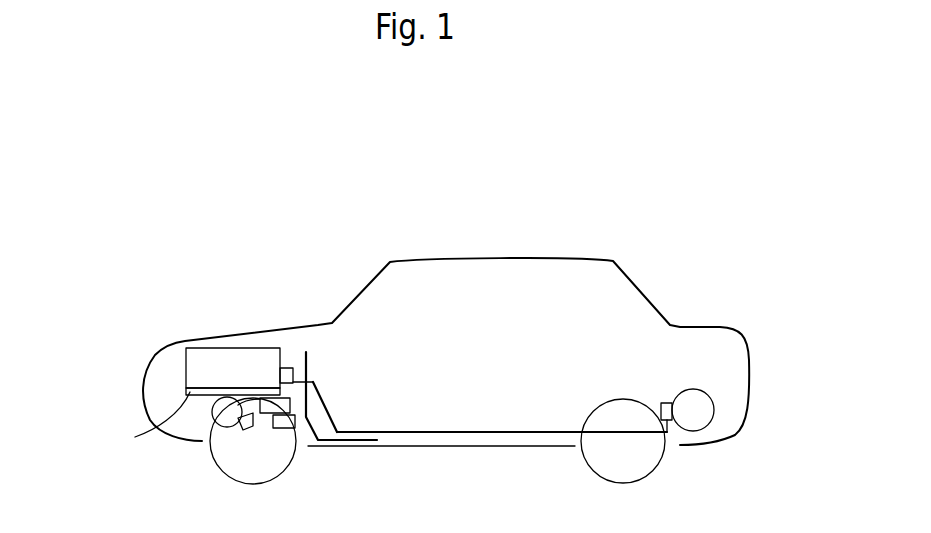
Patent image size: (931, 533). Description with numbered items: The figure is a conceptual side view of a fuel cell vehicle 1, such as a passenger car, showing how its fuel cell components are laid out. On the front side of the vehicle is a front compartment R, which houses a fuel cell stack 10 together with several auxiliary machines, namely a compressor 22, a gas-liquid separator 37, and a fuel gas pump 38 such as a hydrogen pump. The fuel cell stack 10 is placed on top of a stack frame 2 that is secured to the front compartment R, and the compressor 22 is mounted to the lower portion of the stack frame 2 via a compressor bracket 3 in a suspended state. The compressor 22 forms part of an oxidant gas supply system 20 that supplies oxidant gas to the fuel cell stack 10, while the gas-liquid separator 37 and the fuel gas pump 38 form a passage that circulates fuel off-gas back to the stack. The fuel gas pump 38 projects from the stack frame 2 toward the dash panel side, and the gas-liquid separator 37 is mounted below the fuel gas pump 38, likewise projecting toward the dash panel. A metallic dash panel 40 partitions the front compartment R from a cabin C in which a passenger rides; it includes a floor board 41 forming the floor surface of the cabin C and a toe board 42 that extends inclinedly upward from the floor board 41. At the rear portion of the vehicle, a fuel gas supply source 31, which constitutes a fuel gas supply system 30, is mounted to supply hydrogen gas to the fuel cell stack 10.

The fuel cell vehicle 1 is at (479, 227).
The stack frame 2 is at (152, 425).
The compressor bracket 3 is at (263, 387).
The fuel cell stack 10 is at (257, 352).
The oxidant gas supply system 20 is at (207, 408).
The compressor 22 is at (232, 420).
The fuel gas supply system 30 is at (493, 428).
The fuel gas supply source 31 is at (697, 398).
The gas-liquid separator 37 is at (288, 423).
The fuel gas pump 38 is at (268, 410).
The dash panel 40 is at (312, 357).
The floor board 41 is at (355, 441).
The toe board 42 is at (313, 428).
The front compartment R is at (168, 388).
The cabin C is at (482, 343).